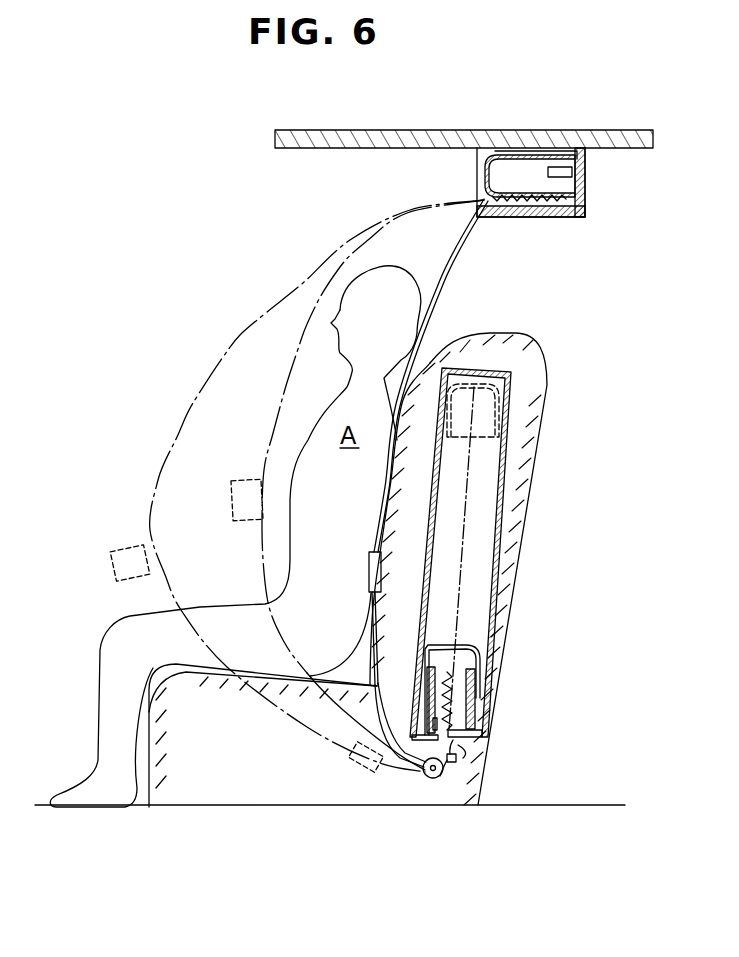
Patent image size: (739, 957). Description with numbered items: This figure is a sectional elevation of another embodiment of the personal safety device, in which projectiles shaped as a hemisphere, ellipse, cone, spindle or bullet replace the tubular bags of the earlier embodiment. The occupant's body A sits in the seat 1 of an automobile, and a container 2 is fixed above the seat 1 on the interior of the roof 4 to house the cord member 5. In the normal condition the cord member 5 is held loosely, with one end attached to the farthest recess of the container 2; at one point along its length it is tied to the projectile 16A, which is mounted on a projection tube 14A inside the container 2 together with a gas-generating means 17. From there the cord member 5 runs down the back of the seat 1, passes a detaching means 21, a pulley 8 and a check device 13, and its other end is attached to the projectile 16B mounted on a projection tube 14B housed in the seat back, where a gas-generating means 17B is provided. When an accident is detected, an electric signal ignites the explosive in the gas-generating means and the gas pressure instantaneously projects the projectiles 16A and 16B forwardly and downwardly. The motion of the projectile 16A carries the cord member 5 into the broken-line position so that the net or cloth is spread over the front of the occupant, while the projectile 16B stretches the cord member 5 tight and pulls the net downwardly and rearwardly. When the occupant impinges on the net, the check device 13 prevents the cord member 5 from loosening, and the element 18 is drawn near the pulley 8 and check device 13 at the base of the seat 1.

The seat 1 is at (508, 336).
The container 2 is at (588, 203).
The roof 4 is at (330, 130).
The cord member 5 is at (466, 238).
The pulley 8 is at (441, 785).
The check device 13 is at (447, 757).
The projection tube 14A is at (528, 152).
The projection tube 14B is at (507, 468).
The projectile 16A is at (486, 168).
The projectile 16B is at (481, 651).
The gas-generating means 17 is at (560, 168).
The gas-generating means 17B is at (468, 718).
The lever 18 is at (464, 755).
The detaching means 21 is at (369, 567).